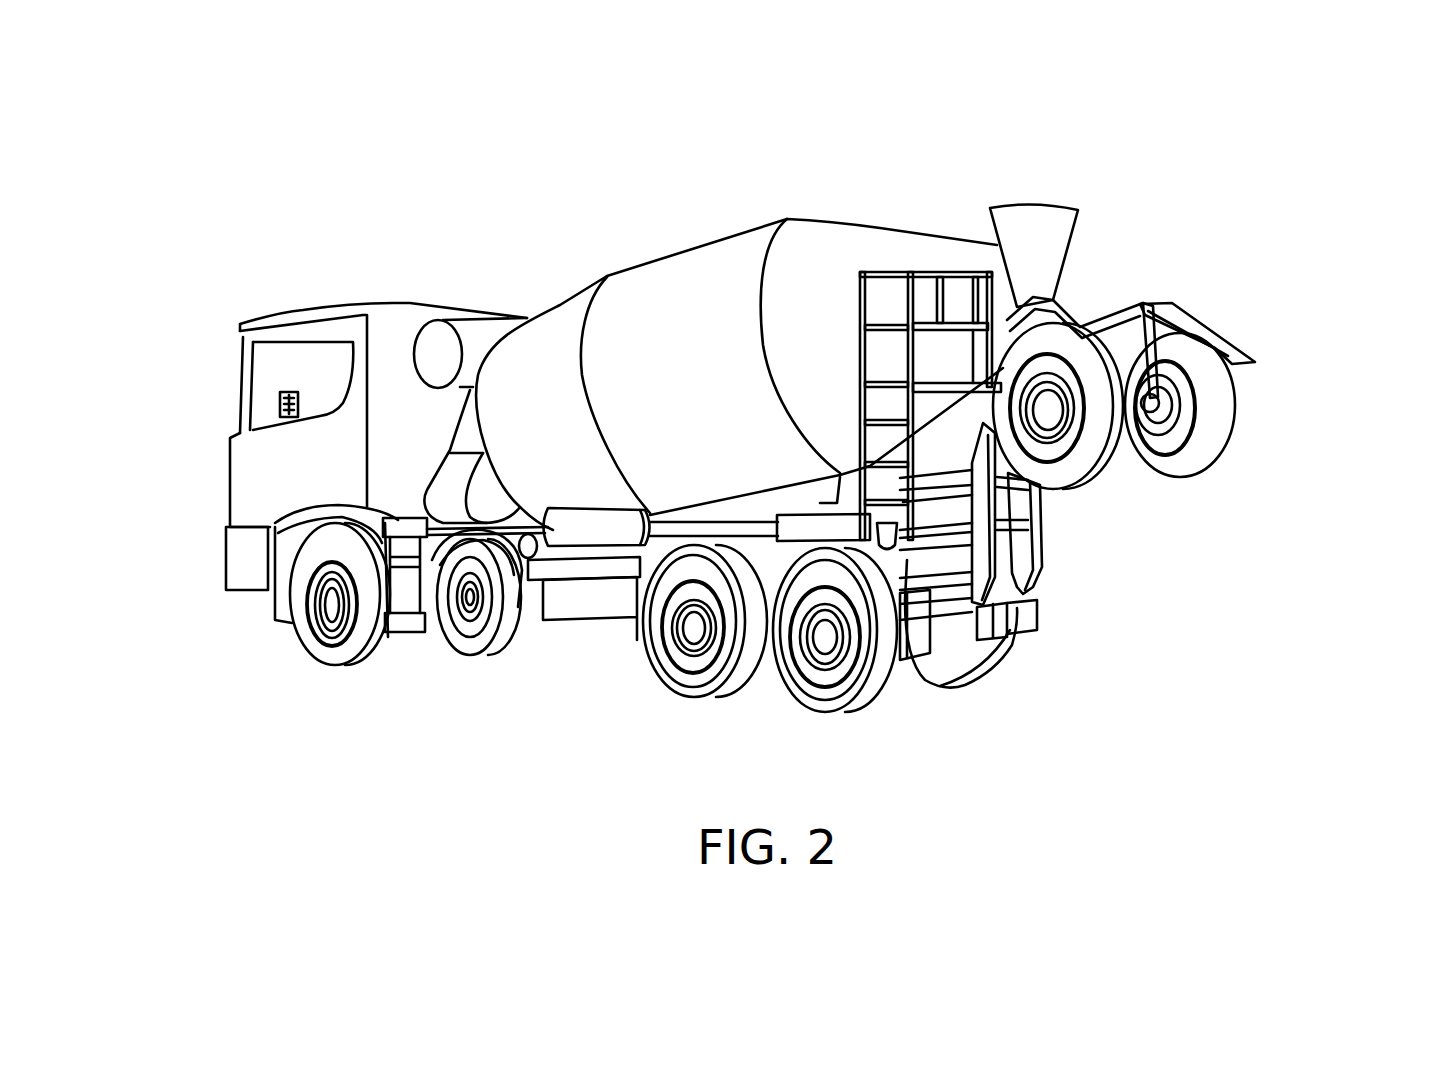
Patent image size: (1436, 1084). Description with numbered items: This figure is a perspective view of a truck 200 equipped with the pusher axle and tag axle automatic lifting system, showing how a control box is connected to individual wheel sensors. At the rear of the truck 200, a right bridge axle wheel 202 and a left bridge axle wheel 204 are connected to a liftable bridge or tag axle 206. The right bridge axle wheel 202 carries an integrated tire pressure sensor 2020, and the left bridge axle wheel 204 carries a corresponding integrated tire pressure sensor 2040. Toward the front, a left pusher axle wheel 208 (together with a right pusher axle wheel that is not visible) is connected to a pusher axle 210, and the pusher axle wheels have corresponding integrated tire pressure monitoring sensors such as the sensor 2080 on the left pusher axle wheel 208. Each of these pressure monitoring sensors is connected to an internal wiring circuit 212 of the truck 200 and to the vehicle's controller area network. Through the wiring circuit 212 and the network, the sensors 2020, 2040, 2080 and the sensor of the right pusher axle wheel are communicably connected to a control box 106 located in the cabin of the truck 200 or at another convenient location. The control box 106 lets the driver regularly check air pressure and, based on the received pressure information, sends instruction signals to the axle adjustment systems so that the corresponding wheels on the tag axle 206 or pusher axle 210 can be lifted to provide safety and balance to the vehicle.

The truck 200 is at (478, 282).
The control box 106 is at (280, 407).
The right bridge axle wheel 202 is at (1217, 410).
The left bridge axle wheel 204 is at (1103, 428).
The liftable bridge or tag axle 206 is at (1100, 427).
The left pusher axle wheel 208 is at (480, 643).
The integrated tire pressure monitoring sensor 2080 is at (477, 562).
The pusher axle 210 is at (532, 583).
The internal wiring circuit 212 is at (328, 513).
The integrated tire pressure sensor 2020 is at (1183, 353).
The integrated tire pressure sensor 2040 is at (1047, 347).